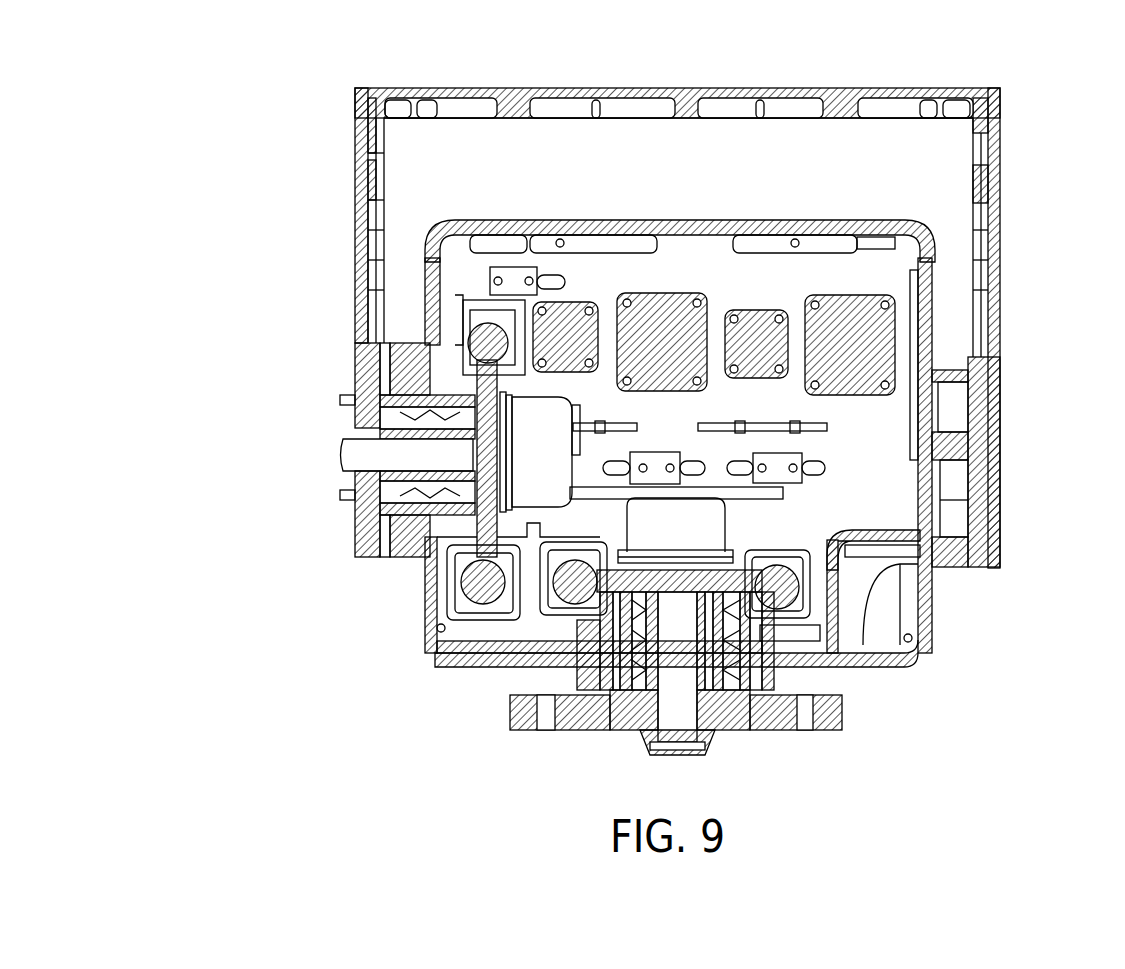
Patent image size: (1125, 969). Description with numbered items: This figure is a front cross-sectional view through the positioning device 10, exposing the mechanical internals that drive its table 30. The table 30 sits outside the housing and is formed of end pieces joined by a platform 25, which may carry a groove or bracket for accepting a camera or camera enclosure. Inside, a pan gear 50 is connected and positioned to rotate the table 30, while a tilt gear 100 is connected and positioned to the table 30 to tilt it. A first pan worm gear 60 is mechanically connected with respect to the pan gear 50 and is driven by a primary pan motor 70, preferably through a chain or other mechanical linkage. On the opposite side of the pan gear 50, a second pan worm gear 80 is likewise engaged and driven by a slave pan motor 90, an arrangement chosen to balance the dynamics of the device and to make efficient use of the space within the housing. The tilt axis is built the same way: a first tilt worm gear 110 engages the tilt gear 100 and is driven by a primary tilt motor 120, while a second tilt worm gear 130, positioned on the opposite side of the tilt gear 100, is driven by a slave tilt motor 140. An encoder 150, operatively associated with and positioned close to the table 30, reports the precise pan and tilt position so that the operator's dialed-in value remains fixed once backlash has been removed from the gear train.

The positioning device 10 is at (262, 160).
The platform 25 is at (922, 88).
The table 30 is at (1036, 160).
The pan gear 50 is at (742, 578).
The first pan worm gear 60 is at (780, 610).
The primary pan motor 70 is at (850, 330).
The second pan worm gear 80 is at (555, 640).
The slave pan motor 90 is at (745, 335).
The tilt gear 100 is at (425, 575).
The first tilt worm gear 110 is at (487, 345).
The primary tilt motor 120 is at (660, 330).
The second tilt worm gear 130 is at (485, 625).
The slave tilt motor 140 is at (565, 325).
The encoder 150 is at (555, 416).